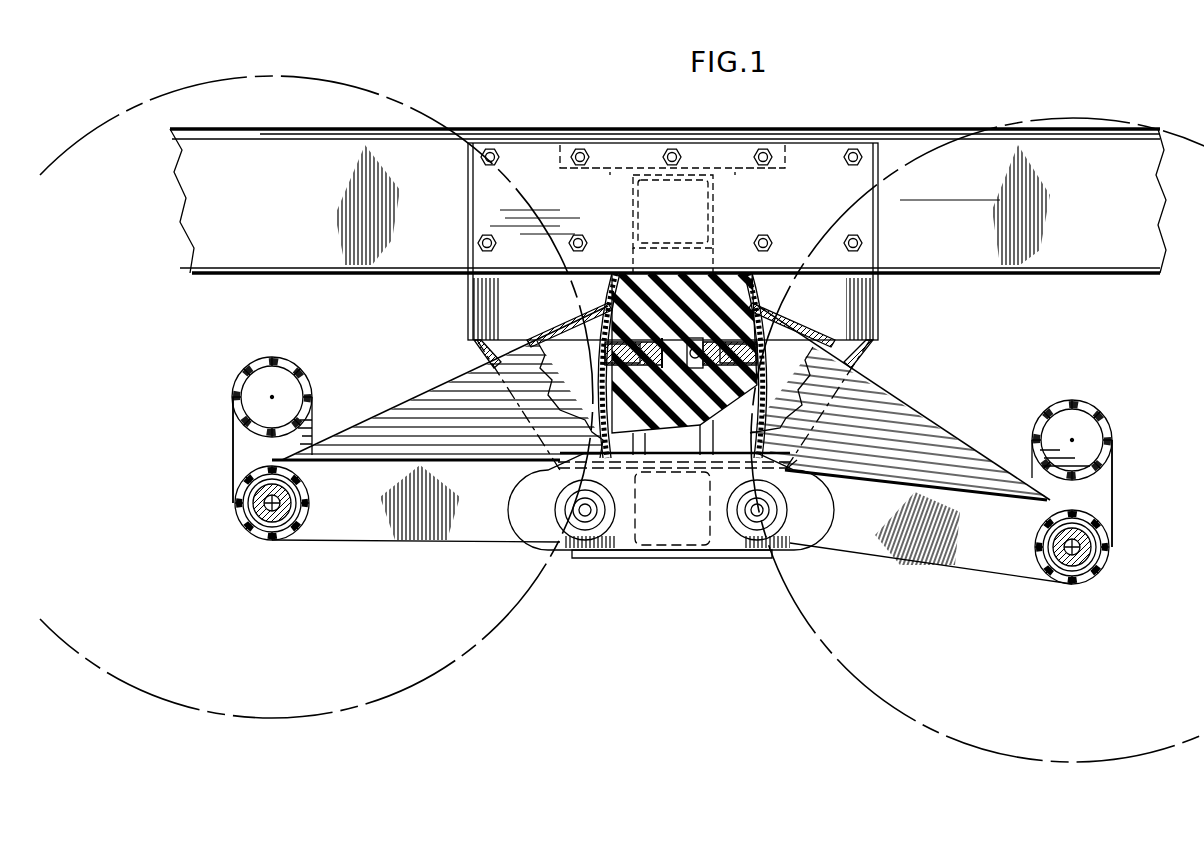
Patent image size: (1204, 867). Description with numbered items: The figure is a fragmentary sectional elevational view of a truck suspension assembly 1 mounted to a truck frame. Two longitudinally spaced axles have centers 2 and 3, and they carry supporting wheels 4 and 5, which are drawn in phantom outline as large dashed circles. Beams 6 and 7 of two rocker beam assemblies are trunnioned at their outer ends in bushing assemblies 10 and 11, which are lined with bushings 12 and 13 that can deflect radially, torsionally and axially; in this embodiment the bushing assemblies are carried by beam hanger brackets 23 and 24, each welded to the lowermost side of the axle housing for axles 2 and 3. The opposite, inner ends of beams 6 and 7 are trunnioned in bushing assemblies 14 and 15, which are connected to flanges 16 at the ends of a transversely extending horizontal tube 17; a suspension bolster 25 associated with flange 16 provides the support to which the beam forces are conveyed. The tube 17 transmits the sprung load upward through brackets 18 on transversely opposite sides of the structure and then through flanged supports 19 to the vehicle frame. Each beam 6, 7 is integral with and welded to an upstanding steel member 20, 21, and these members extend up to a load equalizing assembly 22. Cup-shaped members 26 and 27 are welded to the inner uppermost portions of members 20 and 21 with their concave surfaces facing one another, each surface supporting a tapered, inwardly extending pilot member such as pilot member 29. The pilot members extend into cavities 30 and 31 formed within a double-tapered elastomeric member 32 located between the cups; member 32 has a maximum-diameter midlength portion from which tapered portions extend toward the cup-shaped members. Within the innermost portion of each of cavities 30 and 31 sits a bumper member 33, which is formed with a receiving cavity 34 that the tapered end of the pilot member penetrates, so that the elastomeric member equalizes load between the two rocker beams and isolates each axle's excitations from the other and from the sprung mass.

The assembly 1 is at (832, 136).
The axle center 2 is at (270, 395).
The axle center 3 is at (1070, 440).
The supporting wheel 4 is at (260, 76).
The supporting wheel 5 is at (1075, 122).
The beam 6 is at (464, 553).
The beam 7 is at (980, 583).
The bushing assembly 10 is at (245, 531).
The bushing assembly 11 is at (1095, 585).
The bushing 12 is at (288, 526).
The bushing 13 is at (1100, 546).
The bushing assembly 14 is at (552, 510).
The bushing assembly 15 is at (727, 508).
The flange 16 is at (730, 557).
The horizontal tube 17 is at (660, 550).
The bracket 18 is at (484, 349).
The flanged support 19 is at (536, 150).
The upstanding steel member 20 is at (408, 400).
The upstanding steel member 21 is at (918, 425).
The load equalizing assembly 22 is at (626, 268).
The beam hanger bracket 23 is at (233, 463).
The beam hanger bracket 24 is at (1110, 500).
The suspension bolster 25 is at (815, 472).
The cup-shaped member 26 is at (600, 297).
The cup-shaped member 27 is at (785, 300).
The pilot member 29 is at (605, 362).
The cavity 30 is at (605, 350).
The cavity 31 is at (758, 370).
The double-tapered elastomeric member 32 is at (733, 300).
The bumper member 33 is at (668, 342).
The receiving cavity 34 is at (700, 366).